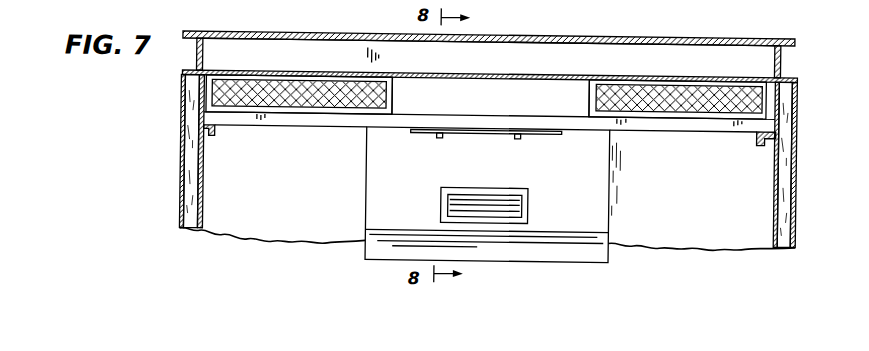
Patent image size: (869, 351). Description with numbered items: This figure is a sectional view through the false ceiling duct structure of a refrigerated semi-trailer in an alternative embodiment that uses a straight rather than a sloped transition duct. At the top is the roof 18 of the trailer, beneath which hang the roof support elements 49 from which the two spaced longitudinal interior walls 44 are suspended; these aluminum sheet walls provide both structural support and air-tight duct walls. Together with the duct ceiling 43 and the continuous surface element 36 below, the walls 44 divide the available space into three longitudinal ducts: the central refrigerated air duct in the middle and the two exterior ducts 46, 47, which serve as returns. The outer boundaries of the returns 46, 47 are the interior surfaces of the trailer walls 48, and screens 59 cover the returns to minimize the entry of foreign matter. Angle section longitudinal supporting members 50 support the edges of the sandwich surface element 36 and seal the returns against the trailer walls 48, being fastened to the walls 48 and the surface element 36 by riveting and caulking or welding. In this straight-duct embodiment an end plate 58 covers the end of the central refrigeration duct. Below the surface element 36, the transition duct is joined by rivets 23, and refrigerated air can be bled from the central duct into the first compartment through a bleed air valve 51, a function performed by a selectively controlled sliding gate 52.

The roof 18 is at (782, 52).
The rivets 23 is at (443, 130).
The surface element 36 is at (795, 117).
The duct ceiling 43 is at (662, 70).
The longitudinal interior walls 44 is at (388, 74).
The exterior duct (return) 46 is at (267, 80).
The exterior duct (return) 47 is at (740, 86).
The trailer walls 48 is at (202, 99).
The roof support elements 49 is at (607, 46).
The angle section longitudinal supporting members 50 is at (208, 130).
The bleed air valve 51 is at (472, 130).
The sliding gate 52 is at (518, 131).
The end plate 58 is at (503, 93).
The screens 59 is at (330, 81).